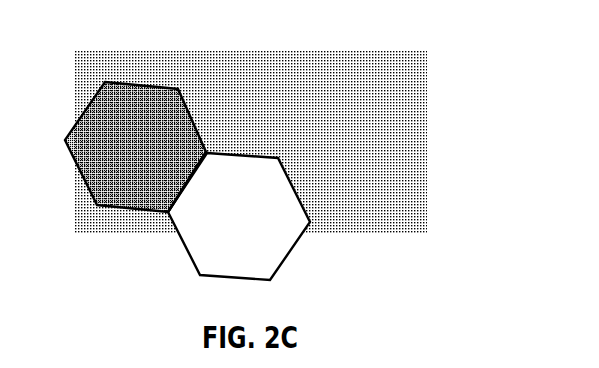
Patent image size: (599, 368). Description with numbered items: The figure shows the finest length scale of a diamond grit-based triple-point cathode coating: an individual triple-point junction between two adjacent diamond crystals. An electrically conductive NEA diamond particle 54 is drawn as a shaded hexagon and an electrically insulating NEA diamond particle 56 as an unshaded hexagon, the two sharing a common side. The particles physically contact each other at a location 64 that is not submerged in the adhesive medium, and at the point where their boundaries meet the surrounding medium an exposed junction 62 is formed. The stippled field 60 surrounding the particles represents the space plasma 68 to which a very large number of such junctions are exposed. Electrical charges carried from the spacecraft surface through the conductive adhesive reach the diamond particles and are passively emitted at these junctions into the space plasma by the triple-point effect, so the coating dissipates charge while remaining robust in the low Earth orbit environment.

The electrically conductive diamond particle 54 is at (88, 173).
The electrically insulating diamond particle 56 is at (202, 243).
The shaded region 60 is at (408, 217).
The exposed junction 62 is at (208, 147).
The contact location 64 is at (194, 182).
The space plasma 68 is at (340, 47).